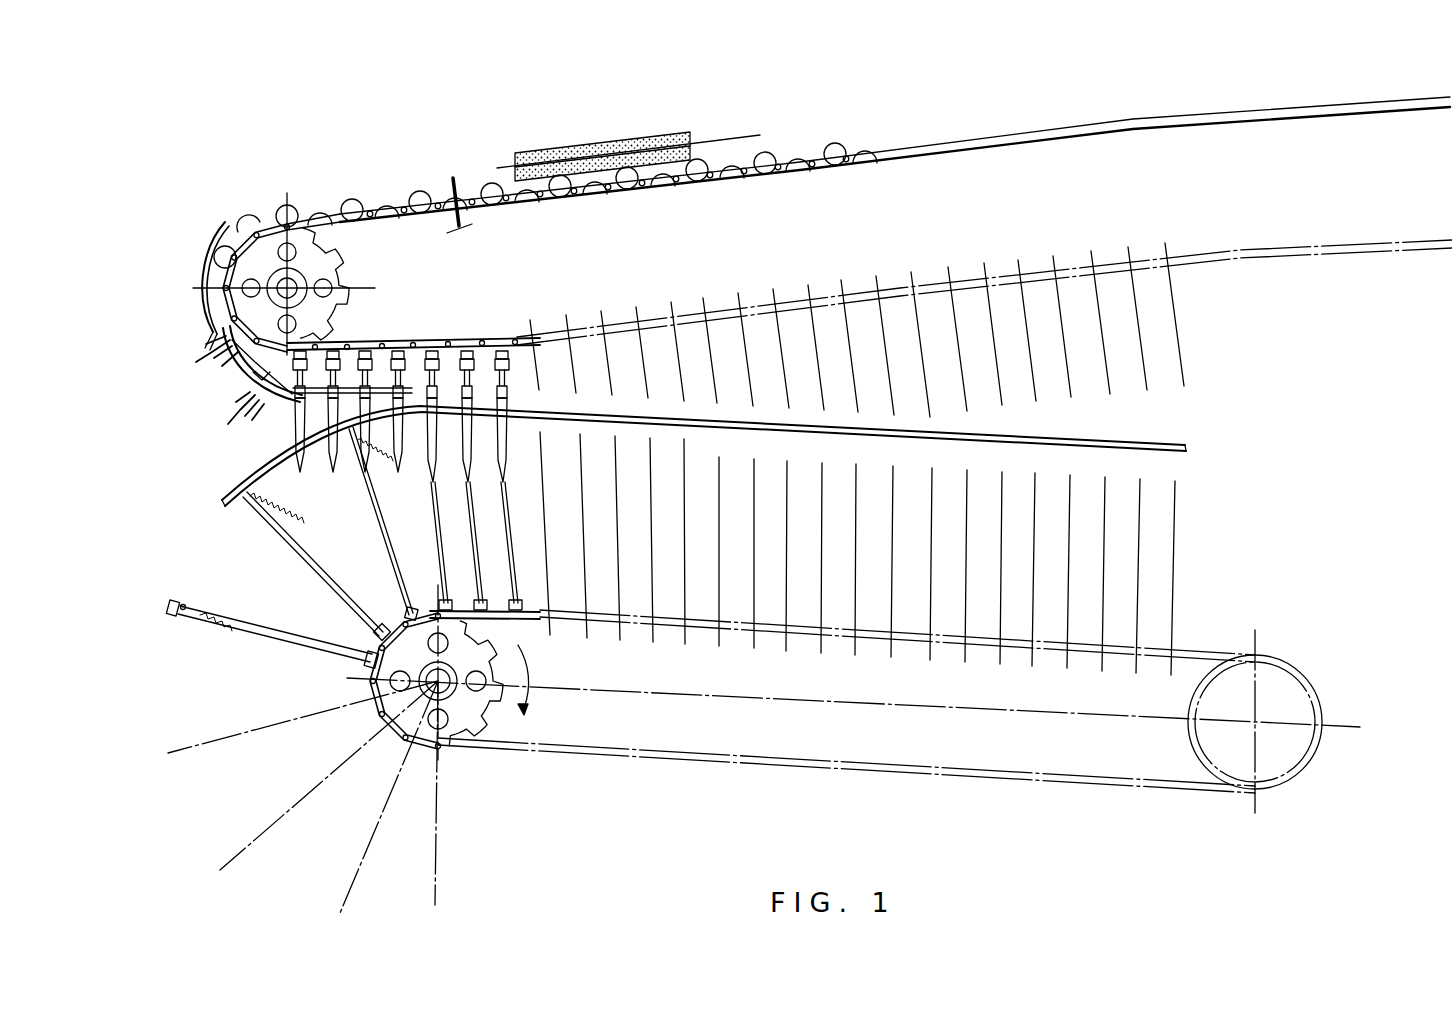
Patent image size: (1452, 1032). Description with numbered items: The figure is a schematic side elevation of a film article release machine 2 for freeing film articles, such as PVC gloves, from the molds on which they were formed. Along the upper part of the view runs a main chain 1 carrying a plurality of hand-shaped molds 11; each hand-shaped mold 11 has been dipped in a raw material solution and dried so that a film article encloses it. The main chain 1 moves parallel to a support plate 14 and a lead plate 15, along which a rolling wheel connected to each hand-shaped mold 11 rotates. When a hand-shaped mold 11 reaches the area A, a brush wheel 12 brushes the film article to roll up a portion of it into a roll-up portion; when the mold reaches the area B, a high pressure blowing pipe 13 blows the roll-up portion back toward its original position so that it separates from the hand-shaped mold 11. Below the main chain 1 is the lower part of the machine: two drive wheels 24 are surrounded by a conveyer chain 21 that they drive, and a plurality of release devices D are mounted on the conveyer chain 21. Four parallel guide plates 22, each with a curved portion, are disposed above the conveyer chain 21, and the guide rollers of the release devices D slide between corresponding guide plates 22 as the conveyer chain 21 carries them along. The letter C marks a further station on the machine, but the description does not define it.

The main chain 1 is at (896, 247).
The film article release machine 2 is at (764, 672).
The hand-shaped mold 11 is at (240, 388).
The brush wheel 12 is at (602, 127).
The high pressure blowing pipe 13 is at (429, 175).
The support plate 14 is at (832, 187).
The lead plate 15 is at (180, 288).
The conveyer chain 21 is at (842, 712).
The guide plate 22 is at (682, 523).
The drive wheel 24 is at (846, 712).
The area A is at (628, 121).
The area B is at (451, 163).
The transfer station C is at (181, 270).
The release device D is at (272, 608).